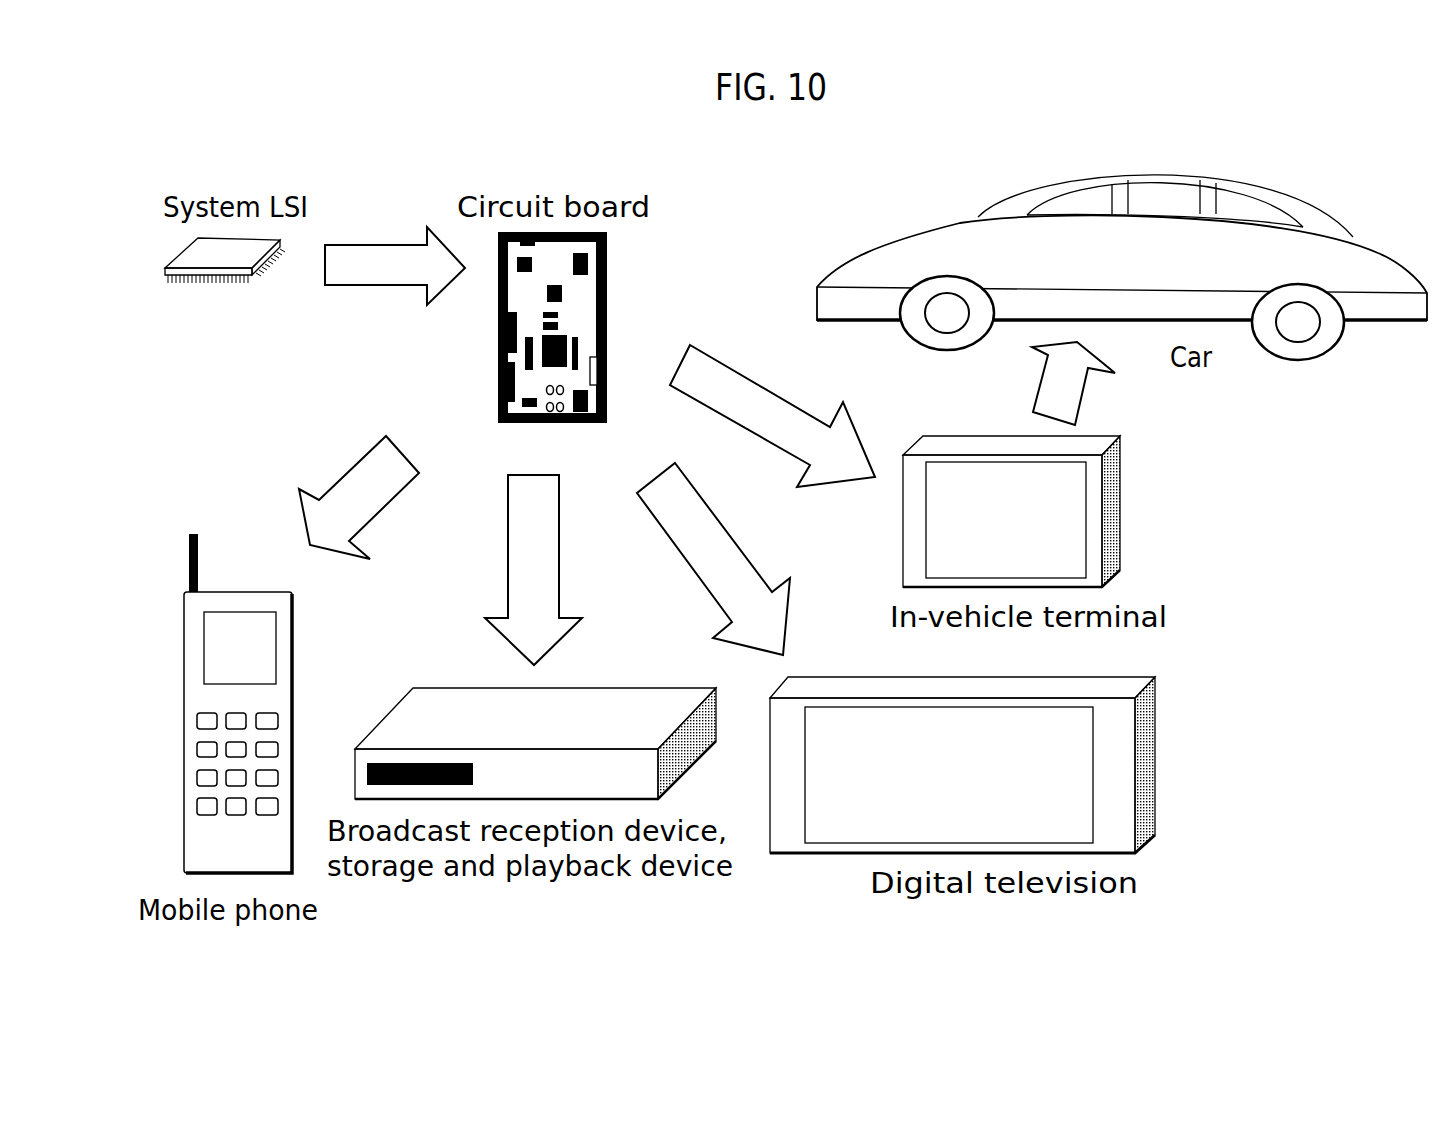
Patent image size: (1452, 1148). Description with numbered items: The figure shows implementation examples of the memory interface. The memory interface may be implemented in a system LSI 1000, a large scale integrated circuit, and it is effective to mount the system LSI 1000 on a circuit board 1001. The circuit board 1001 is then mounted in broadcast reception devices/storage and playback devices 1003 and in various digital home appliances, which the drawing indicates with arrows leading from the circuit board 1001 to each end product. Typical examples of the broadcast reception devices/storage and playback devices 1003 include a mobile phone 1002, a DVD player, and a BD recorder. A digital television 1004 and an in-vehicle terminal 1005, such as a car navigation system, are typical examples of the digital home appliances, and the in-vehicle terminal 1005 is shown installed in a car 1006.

The system LSI 1000 is at (232, 258).
The circuit board 1001 is at (607, 290).
The mobile phone 1002 is at (284, 672).
The broadcast reception device/storage and playback device 1003 is at (638, 770).
The digital television 1004 is at (1127, 817).
The in-vehicle terminal 1005 is at (1093, 557).
The car 1006 is at (912, 247).